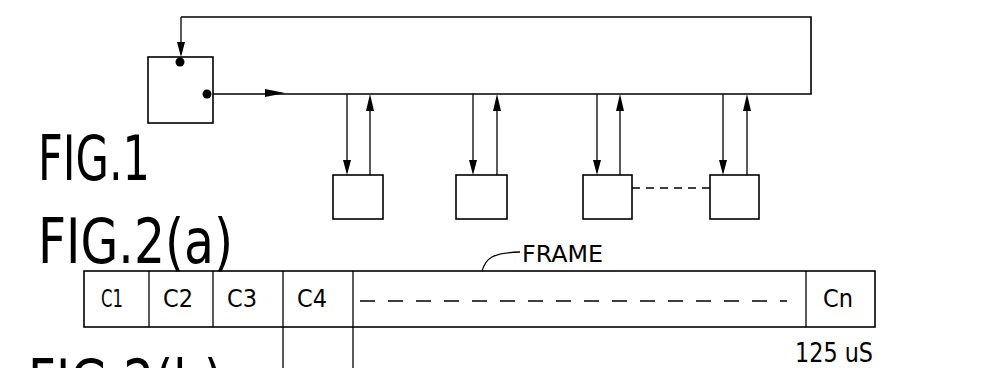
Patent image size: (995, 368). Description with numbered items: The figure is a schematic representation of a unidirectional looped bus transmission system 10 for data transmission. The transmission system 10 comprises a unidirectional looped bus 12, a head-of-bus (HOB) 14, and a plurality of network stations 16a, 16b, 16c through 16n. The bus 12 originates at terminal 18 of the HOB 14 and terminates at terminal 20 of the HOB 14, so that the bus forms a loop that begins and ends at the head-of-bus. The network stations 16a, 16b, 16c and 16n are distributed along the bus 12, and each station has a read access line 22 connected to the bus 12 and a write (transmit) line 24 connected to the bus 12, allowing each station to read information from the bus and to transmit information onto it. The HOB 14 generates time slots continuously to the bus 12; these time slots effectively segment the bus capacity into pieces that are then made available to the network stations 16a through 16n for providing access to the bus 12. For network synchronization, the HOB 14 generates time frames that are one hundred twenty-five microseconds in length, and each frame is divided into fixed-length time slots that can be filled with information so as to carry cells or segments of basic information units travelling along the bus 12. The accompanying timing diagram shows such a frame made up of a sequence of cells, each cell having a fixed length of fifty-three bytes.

The unidirectional looped bus transmission system 10 is at (836, 79).
The unidirectional looped bus 12 is at (195, 17).
The head-of-bus (HOB) 14 is at (148, 95).
The network station 16a is at (358, 197).
The network station 16b is at (481, 197).
The network station 16c is at (646, 197).
The network station 16n is at (734, 197).
The terminal 18 is at (211, 92).
The terminal 20 is at (183, 59).
The read access line 22 is at (347, 143).
The write (transmit) line 24 is at (370, 148).